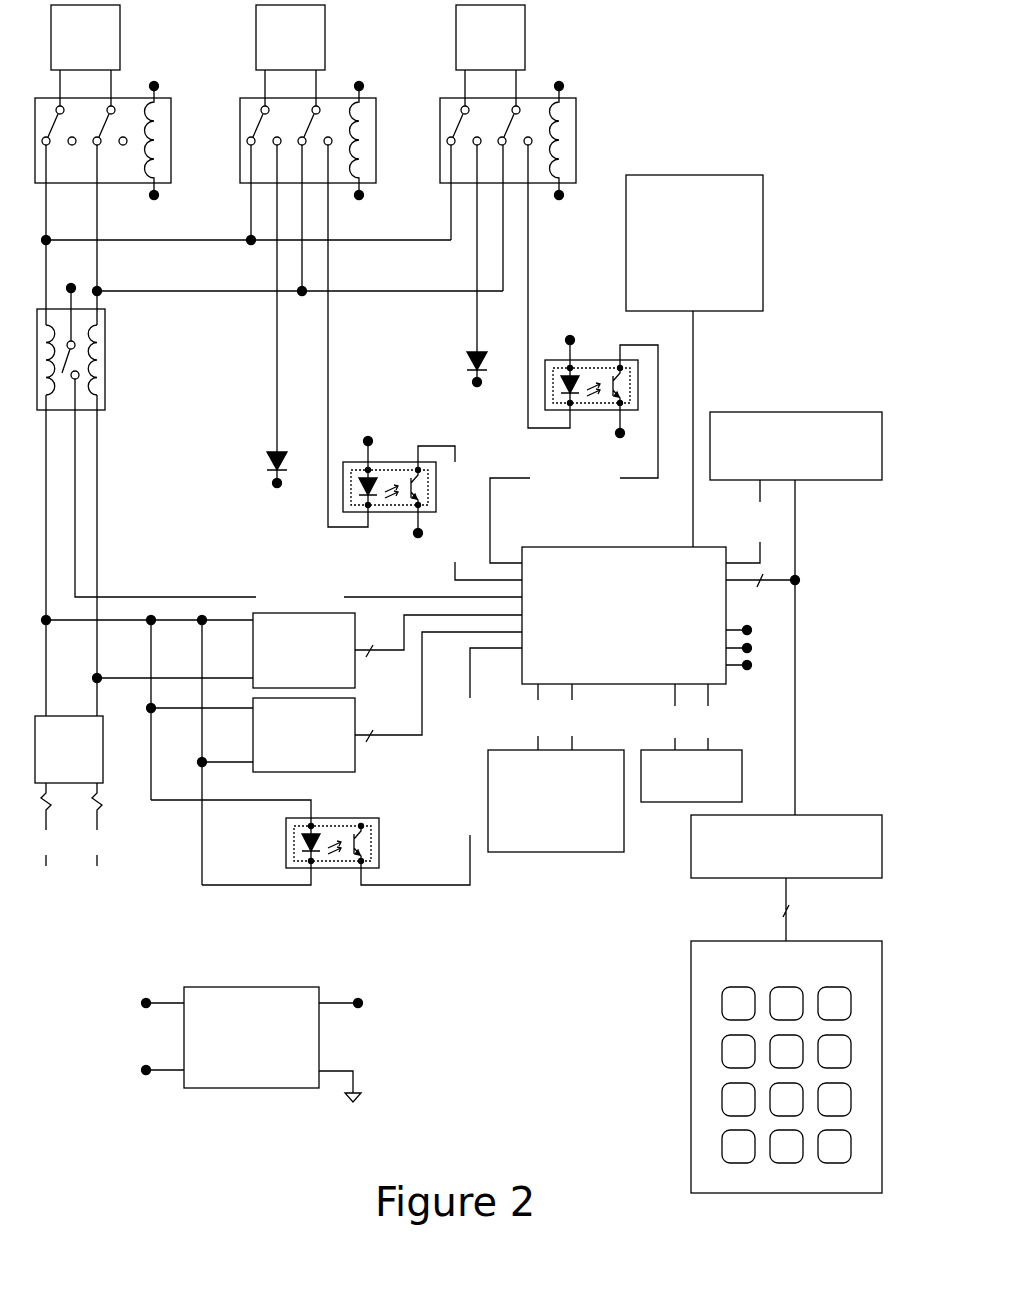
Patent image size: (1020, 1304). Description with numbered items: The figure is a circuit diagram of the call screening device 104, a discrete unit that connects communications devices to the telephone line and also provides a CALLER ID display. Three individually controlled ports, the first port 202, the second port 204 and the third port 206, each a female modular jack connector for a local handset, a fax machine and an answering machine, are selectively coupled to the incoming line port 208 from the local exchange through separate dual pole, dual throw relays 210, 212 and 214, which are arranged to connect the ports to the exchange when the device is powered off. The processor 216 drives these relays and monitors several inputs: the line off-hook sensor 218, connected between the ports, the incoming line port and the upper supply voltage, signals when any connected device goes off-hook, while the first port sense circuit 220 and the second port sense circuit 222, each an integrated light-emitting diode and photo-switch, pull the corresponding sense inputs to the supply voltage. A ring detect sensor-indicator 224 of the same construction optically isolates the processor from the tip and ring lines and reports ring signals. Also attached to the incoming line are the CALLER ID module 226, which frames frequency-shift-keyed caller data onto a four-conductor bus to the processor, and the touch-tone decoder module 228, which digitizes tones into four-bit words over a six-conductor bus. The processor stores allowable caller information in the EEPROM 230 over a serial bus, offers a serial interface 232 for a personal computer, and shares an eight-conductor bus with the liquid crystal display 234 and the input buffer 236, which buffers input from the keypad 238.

The call screening device 104 is at (453, 596).
The port P1 202 is at (513, 53).
The port P2 204 is at (313, 53).
The port P3 206 is at (85, 35).
The incoming line port 208 is at (103, 752).
The DPDT relay 210 is at (531, 139).
The DPDT relay 212 is at (331, 139).
The DPDT relay 214 is at (137, 112).
The processor 216 is at (617, 547).
The line off-hook sensor 218 is at (105, 410).
The Port 1 sense circuit 220 is at (591, 389).
The Port 2 sense circuit 222 is at (389, 490).
The ring detect sensor-indicator 224 is at (332, 869).
The CALLER ID module 226 is at (355, 658).
The touch-tone decoder module 228 is at (355, 752).
The EEPROM 230 is at (598, 750).
The serial interface 232 is at (733, 750).
The liquid crystal display 234 is at (788, 412).
The input buffer 236 is at (818, 815).
The keypad 238 is at (826, 941).